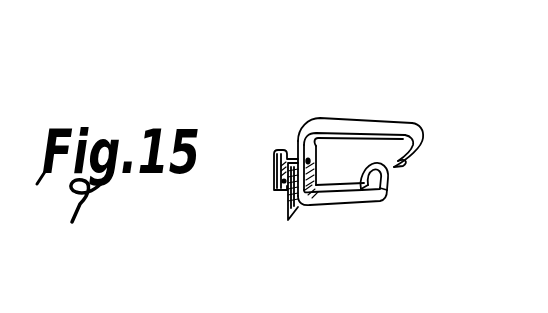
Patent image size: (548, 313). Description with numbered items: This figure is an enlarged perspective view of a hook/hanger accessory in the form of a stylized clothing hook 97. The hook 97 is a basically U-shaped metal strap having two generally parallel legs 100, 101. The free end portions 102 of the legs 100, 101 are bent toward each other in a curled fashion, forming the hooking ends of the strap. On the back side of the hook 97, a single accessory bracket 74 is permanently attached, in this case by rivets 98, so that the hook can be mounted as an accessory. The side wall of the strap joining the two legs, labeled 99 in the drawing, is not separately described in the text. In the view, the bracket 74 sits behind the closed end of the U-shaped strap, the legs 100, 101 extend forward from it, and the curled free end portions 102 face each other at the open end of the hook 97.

The accessory bracket 74 is at (272, 195).
The clothing hook 97 is at (376, 169).
The rivets 98 is at (332, 158).
The side wall of clip 99 is at (298, 141).
The leg 100 is at (361, 208).
The leg 101 is at (358, 121).
The free end portions 102 is at (424, 138).